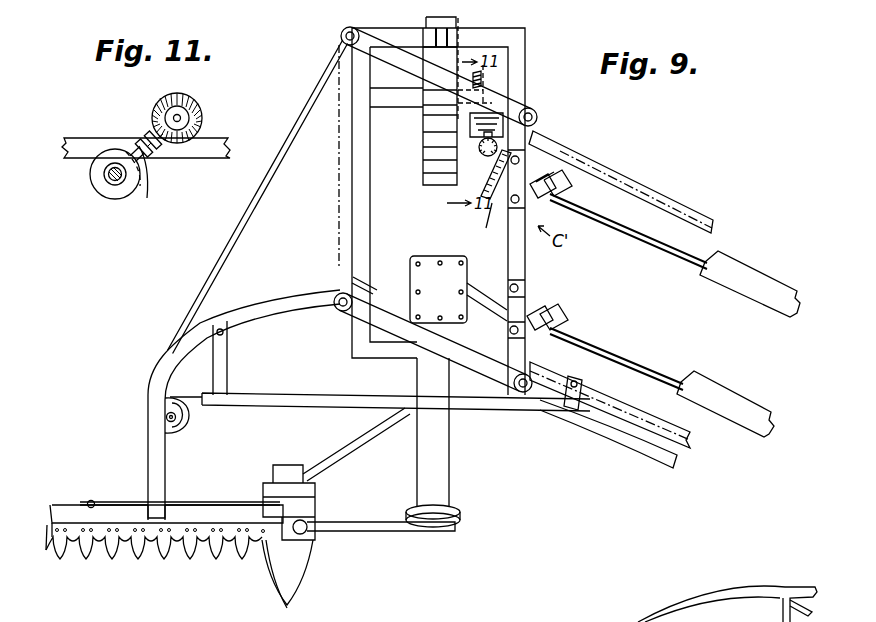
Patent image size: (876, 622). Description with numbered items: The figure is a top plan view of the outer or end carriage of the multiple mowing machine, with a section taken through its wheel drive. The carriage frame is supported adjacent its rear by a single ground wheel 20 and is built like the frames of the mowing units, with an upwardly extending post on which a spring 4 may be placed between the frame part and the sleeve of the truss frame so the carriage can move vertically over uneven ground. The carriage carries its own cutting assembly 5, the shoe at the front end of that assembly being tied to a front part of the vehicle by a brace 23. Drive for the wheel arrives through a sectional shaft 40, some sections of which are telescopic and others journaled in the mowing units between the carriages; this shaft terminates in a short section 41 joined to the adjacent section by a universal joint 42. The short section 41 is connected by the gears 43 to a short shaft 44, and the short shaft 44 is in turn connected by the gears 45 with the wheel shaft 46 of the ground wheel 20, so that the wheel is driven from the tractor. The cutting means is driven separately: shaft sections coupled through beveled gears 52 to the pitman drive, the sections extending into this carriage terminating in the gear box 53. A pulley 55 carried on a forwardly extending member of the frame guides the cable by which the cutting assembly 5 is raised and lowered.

In FIG. 11, the spring 4 is at (133, 192).
In FIG. 11, the cutting assembly 5 is at (149, 184).
In FIG. 9, the ground wheel 20 is at (420, 172).
In FIG. 9, the brace 23 is at (364, 449).
In FIG. 9, the sectional shaft 40 is at (758, 280).
In FIG. 9, the short section 41 is at (500, 182).
In FIG. 9, the universal joint 42 is at (483, 156).
In FIG. 11, the gears 43 is at (156, 109).
In FIG. 11, the short shaft 44 is at (150, 158).
In FIG. 9, the short shaft 44 is at (530, 107).
In FIG. 9, the gears 45 is at (500, 110).
In FIG. 11, the wheel shaft 46 is at (113, 180).
In FIG. 9, the wheel shaft 46 is at (411, 107).
In FIG. 9, the beveled gears 52 is at (487, 295).
In FIG. 9, the gear box 53 is at (447, 263).
In FIG. 9, the pulley 55 is at (190, 432).